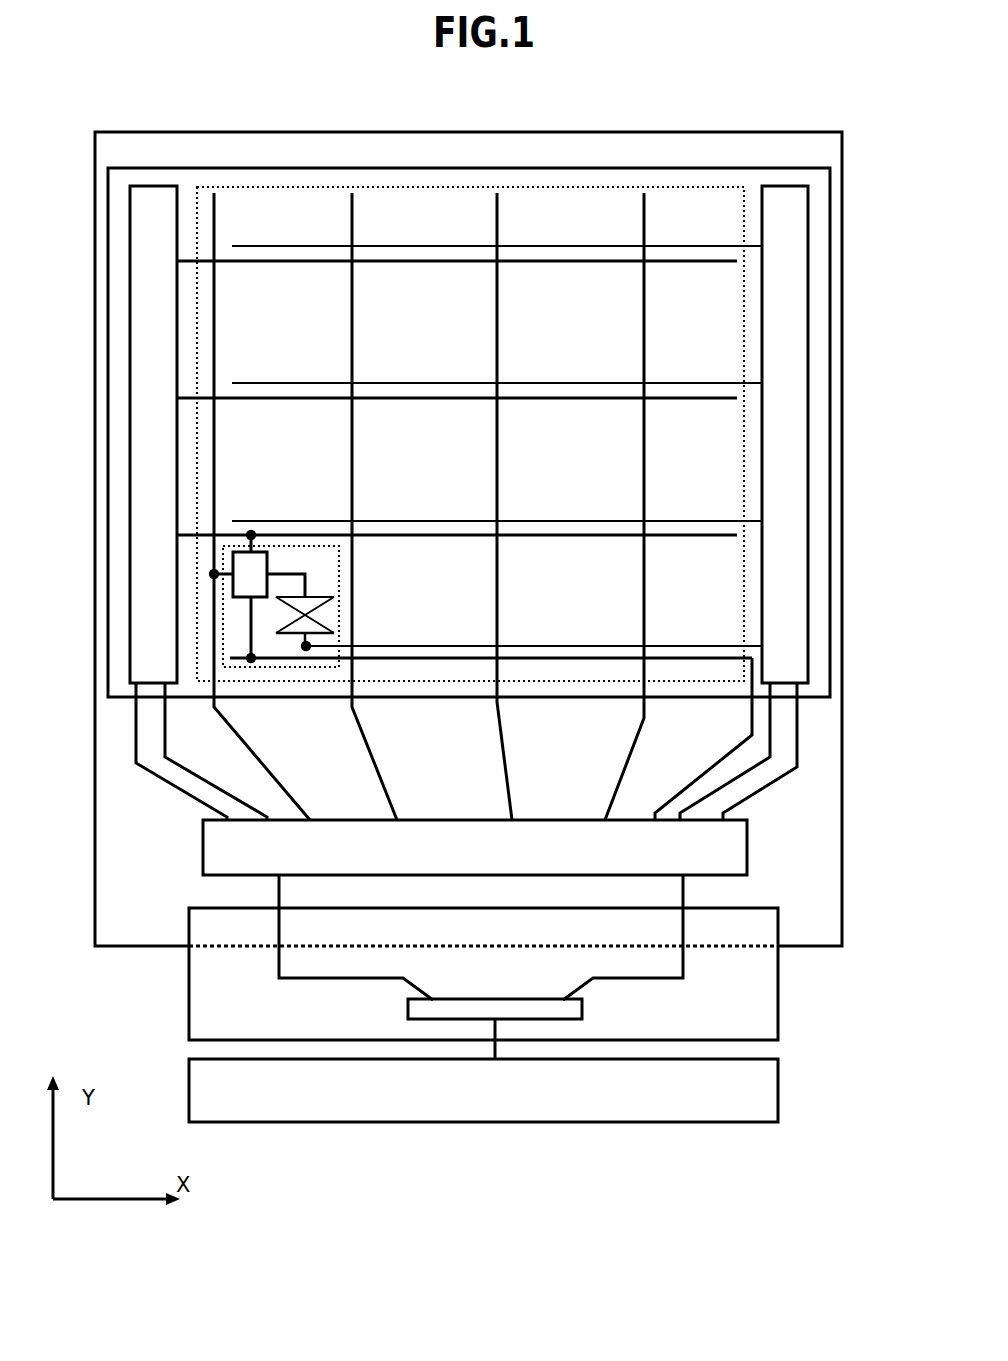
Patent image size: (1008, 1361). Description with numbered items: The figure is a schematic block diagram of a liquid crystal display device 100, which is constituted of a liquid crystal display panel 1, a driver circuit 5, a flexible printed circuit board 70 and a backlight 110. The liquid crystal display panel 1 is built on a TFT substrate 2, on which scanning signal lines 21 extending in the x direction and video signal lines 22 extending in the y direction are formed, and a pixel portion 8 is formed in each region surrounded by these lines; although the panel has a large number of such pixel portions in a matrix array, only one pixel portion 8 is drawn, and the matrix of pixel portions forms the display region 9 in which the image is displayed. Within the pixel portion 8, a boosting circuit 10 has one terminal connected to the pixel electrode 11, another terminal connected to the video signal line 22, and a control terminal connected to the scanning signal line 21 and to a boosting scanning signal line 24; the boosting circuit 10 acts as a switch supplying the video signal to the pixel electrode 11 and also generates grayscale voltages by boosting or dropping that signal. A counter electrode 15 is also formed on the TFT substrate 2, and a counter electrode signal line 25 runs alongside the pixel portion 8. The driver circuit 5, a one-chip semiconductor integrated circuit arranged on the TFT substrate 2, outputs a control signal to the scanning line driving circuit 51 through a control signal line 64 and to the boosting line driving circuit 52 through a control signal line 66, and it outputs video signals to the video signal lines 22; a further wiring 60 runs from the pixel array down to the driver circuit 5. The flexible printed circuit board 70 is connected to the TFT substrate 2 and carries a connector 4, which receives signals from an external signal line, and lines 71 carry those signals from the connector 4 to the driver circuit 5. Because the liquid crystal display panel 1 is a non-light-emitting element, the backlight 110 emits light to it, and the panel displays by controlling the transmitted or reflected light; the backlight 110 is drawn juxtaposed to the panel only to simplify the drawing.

The liquid crystal display panel 1 is at (451, 137).
The TFT substrate 2 is at (534, 166).
The connector 4 is at (418, 1007).
The driver circuit 5 is at (728, 850).
The pixel portion 8 is at (340, 560).
The display region 9 is at (659, 187).
The boosting circuit 10 is at (258, 550).
The pixel electrode 11 is at (334, 597).
The counter electrode 15 is at (330, 628).
The scanning signal line 21 is at (417, 535).
The video signal line 22 is at (214, 444).
The boosting scanning signal line 24 is at (545, 658).
The counter electrode signal line 25 is at (595, 646).
The scanning line driving circuit 51 is at (150, 210).
The boosting line driving circuit 52 is at (788, 200).
The wiring 60 is at (663, 740).
The control signal line 64 is at (182, 797).
The control signal line 66 is at (748, 803).
The flexible printed circuit board 70 is at (740, 1020).
The lines 71 is at (687, 967).
The liquid crystal display device 100 is at (493, 1133).
The backlight 110 is at (725, 1092).